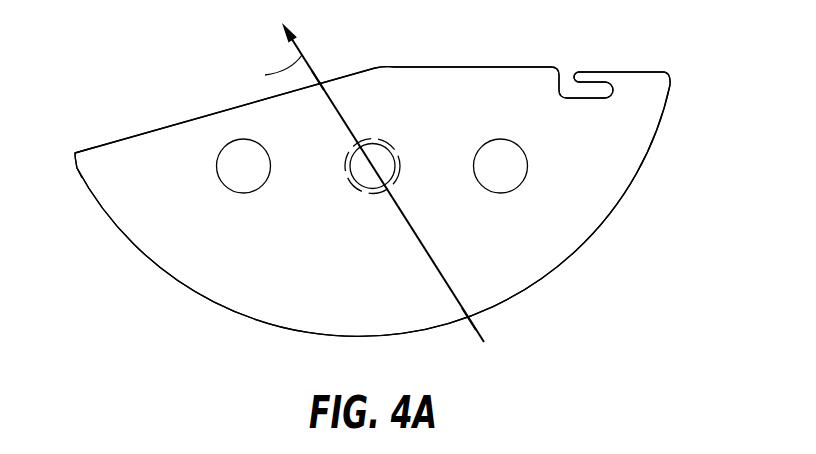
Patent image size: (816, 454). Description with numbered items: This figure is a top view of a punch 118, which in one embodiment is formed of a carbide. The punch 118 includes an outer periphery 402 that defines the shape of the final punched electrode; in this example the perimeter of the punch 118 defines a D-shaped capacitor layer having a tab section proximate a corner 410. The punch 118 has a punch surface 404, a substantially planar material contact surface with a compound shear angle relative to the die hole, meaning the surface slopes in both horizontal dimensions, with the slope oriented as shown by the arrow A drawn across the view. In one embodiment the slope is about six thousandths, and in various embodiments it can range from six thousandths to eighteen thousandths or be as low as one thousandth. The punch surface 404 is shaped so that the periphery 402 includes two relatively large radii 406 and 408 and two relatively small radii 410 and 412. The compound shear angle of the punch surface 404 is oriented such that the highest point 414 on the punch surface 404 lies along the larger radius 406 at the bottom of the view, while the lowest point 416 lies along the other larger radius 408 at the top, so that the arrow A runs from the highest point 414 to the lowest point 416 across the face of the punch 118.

The punch 118 is at (486, 314).
The outer periphery 402 is at (168, 277).
The punch surface 404 is at (303, 262).
The relatively large radius 406 is at (435, 334).
The relatively large radius 408 is at (375, 67).
The relatively small radius 410 is at (668, 73).
The relatively small radius 412 is at (73, 153).
The highest point 414 is at (467, 320).
The lowest point 416 is at (321, 80).